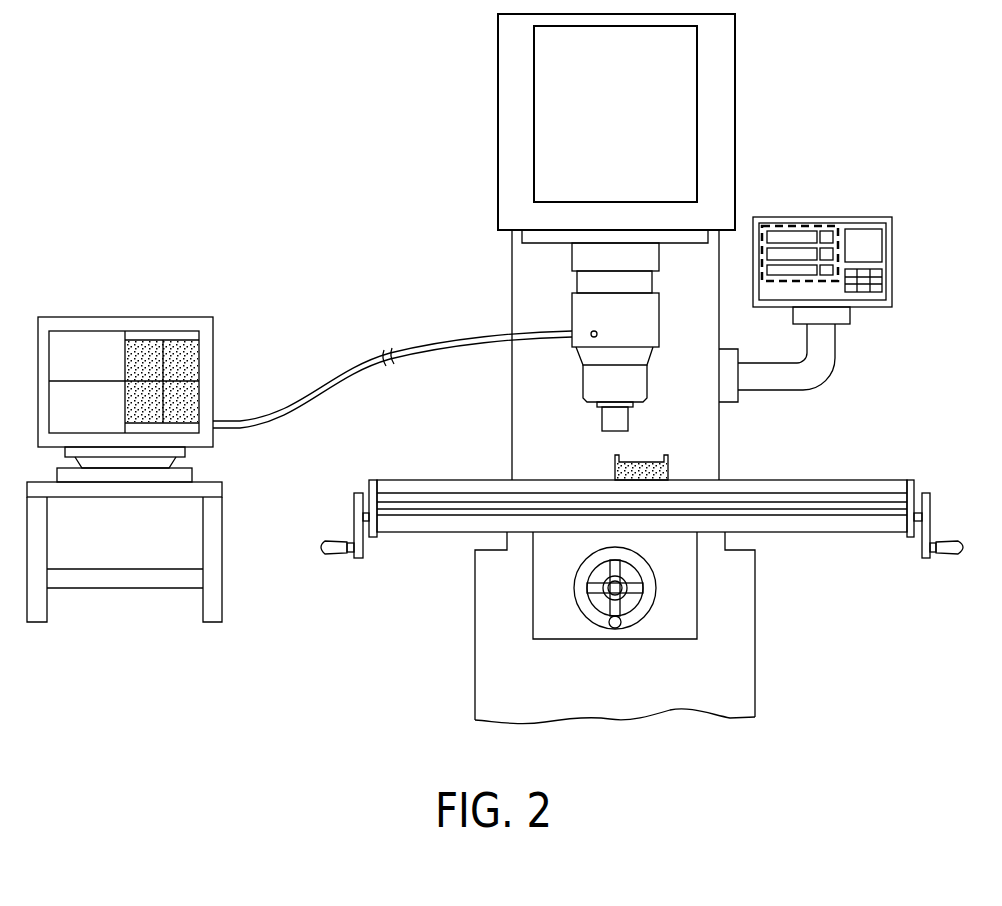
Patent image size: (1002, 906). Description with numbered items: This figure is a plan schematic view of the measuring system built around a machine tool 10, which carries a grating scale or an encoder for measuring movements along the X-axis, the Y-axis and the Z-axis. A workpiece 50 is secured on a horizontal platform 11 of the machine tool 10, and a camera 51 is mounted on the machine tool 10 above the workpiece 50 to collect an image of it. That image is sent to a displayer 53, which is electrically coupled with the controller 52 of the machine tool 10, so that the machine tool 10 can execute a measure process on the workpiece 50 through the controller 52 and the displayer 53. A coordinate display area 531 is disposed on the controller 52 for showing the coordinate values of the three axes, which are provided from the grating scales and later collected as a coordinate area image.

The machine tool 10 is at (823, 138).
The horizontal platform 11 is at (872, 488).
The workpiece 50 is at (642, 455).
The camera 51 is at (602, 421).
The controller 52 is at (868, 236).
The coordinate display area 531 is at (812, 283).
The displayer 53 is at (162, 315).